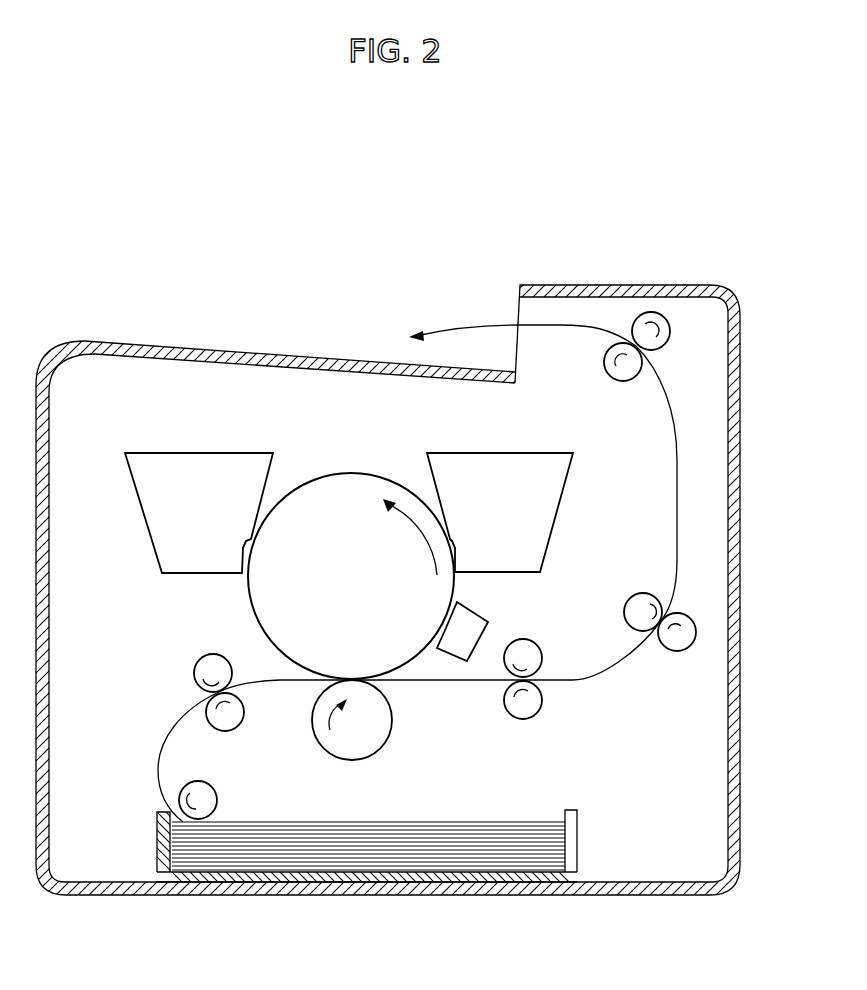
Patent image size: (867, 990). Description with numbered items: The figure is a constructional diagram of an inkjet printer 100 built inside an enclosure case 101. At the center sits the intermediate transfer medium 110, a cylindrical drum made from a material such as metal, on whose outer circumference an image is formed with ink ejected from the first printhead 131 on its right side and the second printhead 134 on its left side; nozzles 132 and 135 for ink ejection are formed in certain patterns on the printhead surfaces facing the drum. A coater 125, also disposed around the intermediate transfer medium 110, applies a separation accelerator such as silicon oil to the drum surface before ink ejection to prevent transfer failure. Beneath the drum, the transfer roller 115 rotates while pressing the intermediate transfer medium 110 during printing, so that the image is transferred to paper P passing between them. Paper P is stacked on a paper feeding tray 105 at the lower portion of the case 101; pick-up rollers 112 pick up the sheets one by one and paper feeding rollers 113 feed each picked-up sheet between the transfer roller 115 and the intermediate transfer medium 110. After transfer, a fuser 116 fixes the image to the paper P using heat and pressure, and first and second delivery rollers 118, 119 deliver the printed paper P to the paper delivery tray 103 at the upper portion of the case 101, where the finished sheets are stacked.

The inkjet printer 100 is at (100, 288).
The enclosure case 101 is at (735, 636).
The paper delivery tray 103 is at (220, 352).
The paper feeding tray 105 is at (580, 857).
The intermediate transfer medium 110 is at (349, 490).
The pick-up rollers 112 is at (208, 796).
The paper feeding rollers 113 is at (189, 651).
The transfer roller 115 is at (378, 734).
The fuser 116 is at (560, 709).
The first delivery roller 118 is at (692, 608).
The second delivery roller 119 is at (624, 303).
The coater 125 is at (472, 621).
The first printhead 131 is at (545, 548).
The nozzles 132 is at (451, 538).
The second printhead 134 is at (160, 548).
The nozzles 135 is at (250, 535).
The paper P is at (505, 822).